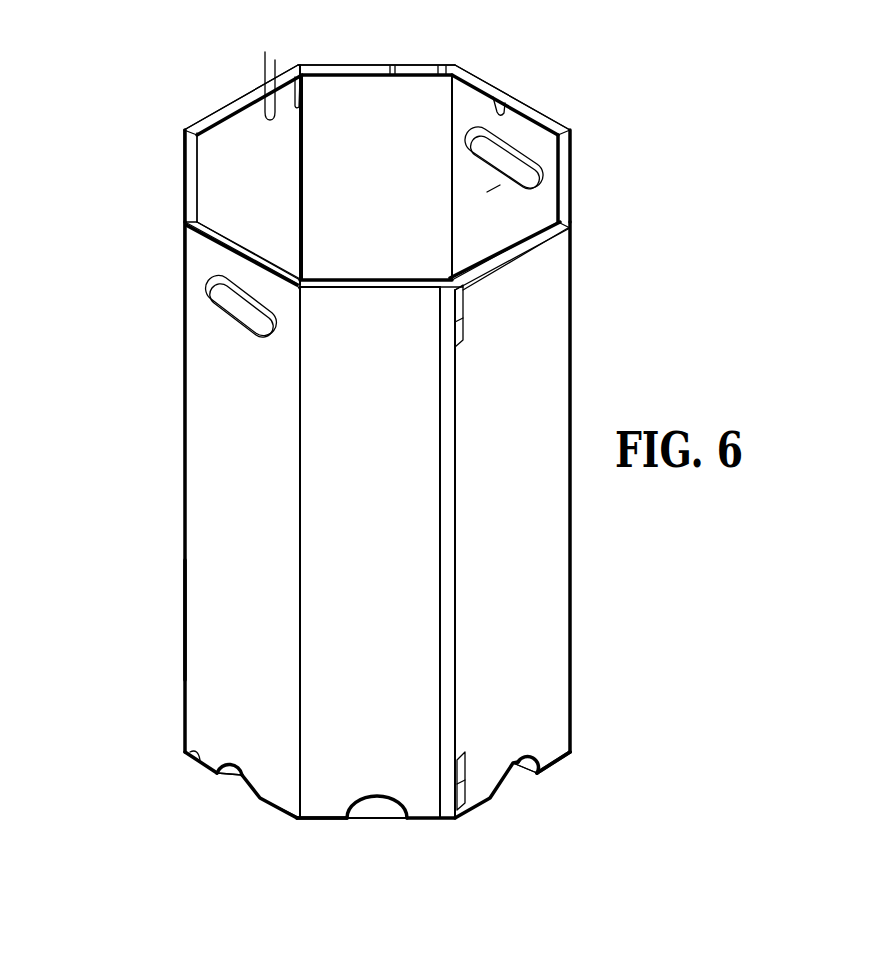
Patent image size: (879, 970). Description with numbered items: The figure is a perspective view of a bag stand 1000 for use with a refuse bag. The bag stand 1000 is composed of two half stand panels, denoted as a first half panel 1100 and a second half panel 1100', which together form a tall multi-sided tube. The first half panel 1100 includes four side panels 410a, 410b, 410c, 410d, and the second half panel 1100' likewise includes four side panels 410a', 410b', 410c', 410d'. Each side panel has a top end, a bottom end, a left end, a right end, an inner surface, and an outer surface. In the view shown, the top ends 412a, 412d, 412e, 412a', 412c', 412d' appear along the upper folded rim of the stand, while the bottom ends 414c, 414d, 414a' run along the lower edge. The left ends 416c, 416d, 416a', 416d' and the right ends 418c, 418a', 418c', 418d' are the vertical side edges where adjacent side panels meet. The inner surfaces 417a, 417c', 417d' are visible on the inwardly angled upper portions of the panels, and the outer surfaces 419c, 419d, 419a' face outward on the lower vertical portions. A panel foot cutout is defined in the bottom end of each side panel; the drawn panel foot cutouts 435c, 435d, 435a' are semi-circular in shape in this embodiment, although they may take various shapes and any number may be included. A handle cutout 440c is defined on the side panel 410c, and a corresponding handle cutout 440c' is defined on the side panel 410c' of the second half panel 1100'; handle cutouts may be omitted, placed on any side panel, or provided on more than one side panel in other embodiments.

The bag stand 1000 is at (650, 101).
The half stand panel 1100 is at (230, 73).
The half stand panel 1100' is at (450, 37).
The side panel 410a is at (188, 97).
The side panel 410b is at (134, 176).
The side panel 410c is at (148, 487).
The side panel 410d is at (286, 748).
The side panel 410a' is at (578, 787).
The side panel 410b' is at (621, 182).
The side panel 410c' is at (524, 101).
The side panel 410d' is at (376, 54).
The top end 412a is at (268, 70).
The top end 412d is at (381, 319).
The top end 412e is at (227, 250).
The top end 412a' is at (510, 276).
The top end 412c' is at (517, 73).
The top end 412d' is at (372, 101).
The bottom end 414c is at (190, 758).
The bottom end 414d is at (330, 816).
The bottom end 414a' is at (572, 779).
The left end 416c is at (190, 614).
The left end 416d is at (343, 552).
The left end 416a' is at (491, 551).
The left end 416d' is at (399, 177).
The inner surface 417a is at (222, 191).
The inner surface 417c' is at (505, 177).
The inner surface 417d' is at (377, 177).
The right end 418c is at (256, 575).
The right end 418a' is at (522, 487).
The right end 418c' is at (495, 203).
The right end 418d' is at (346, 175).
The outer surface 419c is at (212, 389).
The outer surface 419d is at (388, 424).
The outer surface 419a' is at (512, 523).
The panel foot cutout 435c is at (253, 778).
The panel foot cutout 435d is at (385, 805).
The panel foot cutout 435a' is at (593, 724).
The handle cutout 440c is at (178, 322).
The handle cutout 440c' is at (573, 158).